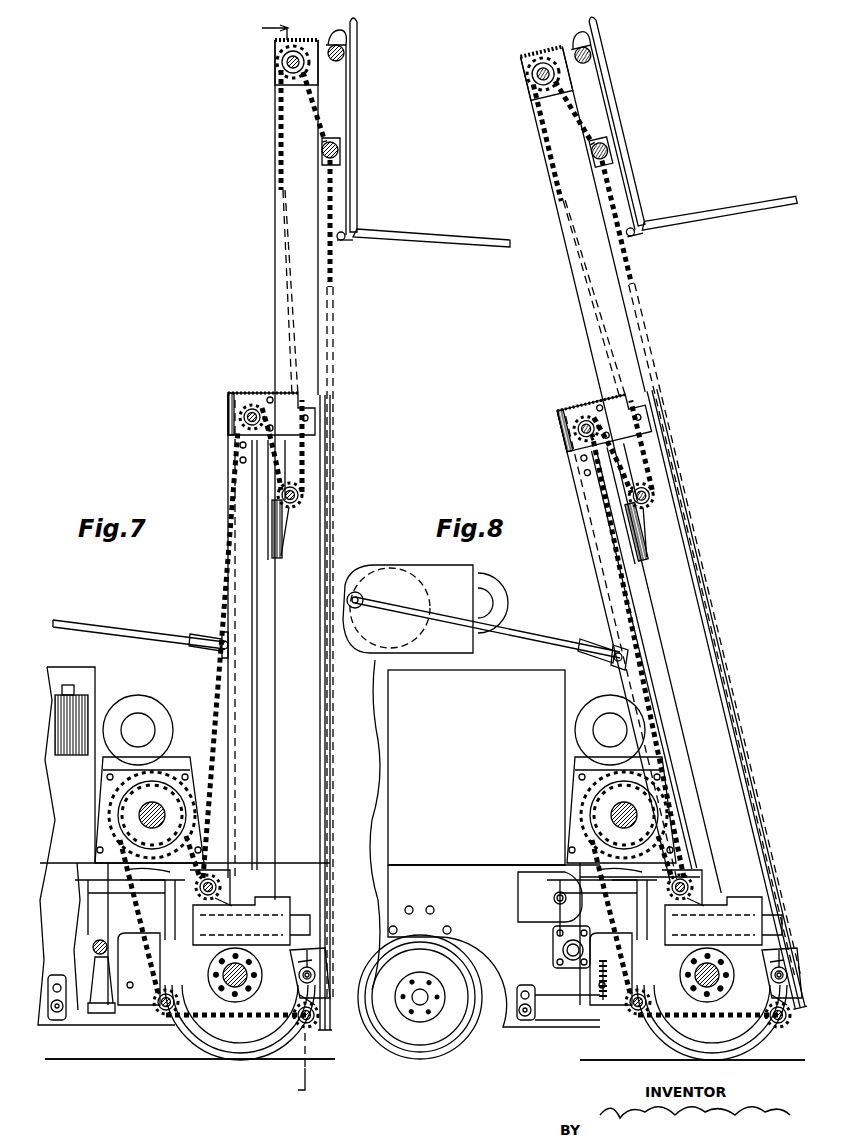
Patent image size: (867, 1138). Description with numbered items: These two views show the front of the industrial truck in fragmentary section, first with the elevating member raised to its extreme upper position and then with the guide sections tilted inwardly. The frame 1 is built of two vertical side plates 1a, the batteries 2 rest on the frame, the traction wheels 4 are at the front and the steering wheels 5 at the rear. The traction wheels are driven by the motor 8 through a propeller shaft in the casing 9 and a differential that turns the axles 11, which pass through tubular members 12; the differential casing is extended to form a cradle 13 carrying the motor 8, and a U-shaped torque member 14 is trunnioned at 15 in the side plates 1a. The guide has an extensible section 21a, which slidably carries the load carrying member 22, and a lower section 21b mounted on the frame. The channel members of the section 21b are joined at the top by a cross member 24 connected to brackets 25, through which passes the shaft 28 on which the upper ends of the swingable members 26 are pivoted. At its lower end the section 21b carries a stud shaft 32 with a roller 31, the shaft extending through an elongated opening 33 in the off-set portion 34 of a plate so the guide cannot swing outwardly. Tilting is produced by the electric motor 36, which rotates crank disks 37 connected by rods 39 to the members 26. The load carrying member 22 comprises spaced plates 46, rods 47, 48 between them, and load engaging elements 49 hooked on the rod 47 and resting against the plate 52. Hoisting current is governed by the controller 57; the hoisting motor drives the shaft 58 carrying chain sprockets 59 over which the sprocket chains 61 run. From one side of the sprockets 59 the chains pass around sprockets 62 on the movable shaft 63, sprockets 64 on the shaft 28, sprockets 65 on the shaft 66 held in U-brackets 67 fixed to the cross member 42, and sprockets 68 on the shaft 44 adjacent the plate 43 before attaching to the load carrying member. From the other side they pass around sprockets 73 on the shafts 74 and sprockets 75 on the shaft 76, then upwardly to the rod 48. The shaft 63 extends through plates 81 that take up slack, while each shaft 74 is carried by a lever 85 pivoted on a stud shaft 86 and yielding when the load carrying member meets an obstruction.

In FIG. 7, the frame 1 is at (184, 846).
In FIG. 8, the frame 1 is at (485, 843).
In FIG. 8, the side plates 1a is at (482, 862).
In FIG. 7, the batteries 2 is at (70, 740).
In FIG. 8, the batteries 2 is at (476, 767).
In FIG. 7, the traction wheels 4 is at (175, 1046).
In FIG. 8, the traction wheels 4 is at (760, 1040).
In FIG. 8, the steering wheels 5 is at (468, 1040).
In FIG. 7, the motor 8 is at (125, 934).
In FIG. 8, the motor 8 is at (597, 934).
In FIG. 7, the casing 9 is at (251, 558).
In FIG. 8, the casing 9 is at (723, 922).
In FIG. 7, the axles 11 is at (252, 965).
In FIG. 8, the axles 11 is at (690, 963).
In FIG. 7, the tubular members 12 is at (230, 993).
In FIG. 8, the tubular members 12 is at (705, 993).
In FIG. 7, the cradle 13 is at (143, 948).
In FIG. 8, the cradle 13 is at (620, 950).
In FIG. 7, the torque member 14 is at (105, 1013).
In FIG. 7, the trunnion 15 is at (92, 945).
In FIG. 8, the trunnion 15 is at (553, 957).
In FIG. 7, the guide section 21a is at (275, 316).
In FIG. 8, the guide section 21a is at (592, 333).
In FIG. 7, the guide section 21b is at (280, 712).
In FIG. 8, the guide section 21b is at (682, 710).
In FIG. 7, the load carrying member 22 is at (370, 125).
In FIG. 8, the load carrying member 22 is at (630, 121).
In FIG. 7, the cross member 24 is at (228, 405).
In FIG. 8, the cross member 24 is at (560, 420).
In FIG. 7, the brackets 25 is at (266, 393).
In FIG. 8, the brackets 25 is at (600, 402).
In FIG. 7, the swingable members 26 is at (257, 815).
In FIG. 8, the swingable members 26 is at (660, 690).
In FIG. 7, the shaft 28 is at (240, 394).
In FIG. 8, the shaft 28 is at (572, 406).
In FIG. 7, the roller 31 is at (310, 952).
In FIG. 8, the roller 31 is at (778, 950).
In FIG. 7, the stud shaft 32 is at (313, 961).
In FIG. 8, the stud shaft 32 is at (784, 958).
In FIG. 7, the elongated opening 33 is at (307, 975).
In FIG. 8, the elongated opening 33 is at (786, 968).
In FIG. 7, the off-set portion 34 is at (310, 945).
In FIG. 8, the off-set portion 34 is at (775, 945).
In FIG. 8, the electric motor 36 is at (502, 600).
In FIG. 8, the crank disks 37 is at (395, 565).
In FIG. 7, the rods 39 is at (125, 620).
In FIG. 8, the rods 39 is at (550, 636).
In FIG. 7, the cross member 42 is at (272, 555).
In FIG. 8, the cross member 42 is at (636, 548).
In FIG. 7, the plate 43 is at (296, 40).
In FIG. 8, the plate 43 is at (545, 50).
In FIG. 7, the shaft 44 is at (278, 66).
In FIG. 8, the shaft 44 is at (530, 72).
In FIG. 7, the plates 46 is at (346, 40).
In FIG. 8, the plates 46 is at (577, 44).
In FIG. 7, the rod 47 is at (344, 56).
In FIG. 8, the rod 47 is at (588, 44).
In FIG. 7, the rod 48 is at (340, 147).
In FIG. 8, the rod 48 is at (610, 150).
In FIG. 7, the load engaging elements 49 is at (412, 238).
In FIG. 8, the load engaging elements 49 is at (722, 200).
In FIG. 7, the plate 52 is at (343, 242).
In FIG. 8, the plate 52 is at (632, 230).
In FIG. 8, the controller 57 is at (520, 908).
In FIG. 7, the shaft 58 is at (138, 815).
In FIG. 8, the shaft 58 is at (622, 815).
In FIG. 7, the chain sprockets 59 is at (125, 845).
In FIG. 8, the chain sprockets 59 is at (621, 810).
In FIG. 7, the sprocket chains 61 is at (237, 490).
In FIG. 8, the sprocket chains 61 is at (582, 496).
In FIG. 7, the sprockets 62 is at (210, 876).
In FIG. 8, the sprockets 62 is at (690, 866).
In FIG. 7, the shaft 63 is at (236, 903).
In FIG. 8, the shaft 63 is at (700, 900).
In FIG. 7, the sprockets 64 is at (250, 435).
In FIG. 8, the sprockets 64 is at (580, 448).
In FIG. 7, the sprockets 65 is at (290, 484).
In FIG. 8, the sprockets 65 is at (640, 480).
In FIG. 7, the shaft 66 is at (295, 508).
In FIG. 8, the shaft 66 is at (660, 492).
In FIG. 7, the U-brackets 67 is at (283, 535).
In FIG. 8, the U-brackets 67 is at (640, 520).
In FIG. 7, the sprockets 68 is at (283, 80).
In FIG. 8, the sprockets 68 is at (538, 96).
In FIG. 7, the sprockets 73 is at (166, 990).
In FIG. 8, the sprockets 73 is at (640, 990).
In FIG. 7, the shafts 74 is at (180, 1000).
In FIG. 8, the shafts 74 is at (650, 1000).
In FIG. 7, the sprockets 75 is at (315, 992).
In FIG. 8, the sprockets 75 is at (785, 985).
In FIG. 7, the shaft 76 is at (318, 1012).
In FIG. 8, the shaft 76 is at (792, 1000).
In FIG. 7, the plates 81 is at (155, 876).
In FIG. 8, the plates 81 is at (627, 871).
In FIG. 7, the lever 85 is at (61, 989).
In FIG. 8, the lever 85 is at (572, 1005).
In FIG. 7, the stud shaft 86 is at (50, 1020).
In FIG. 8, the stud shaft 86 is at (522, 1022).